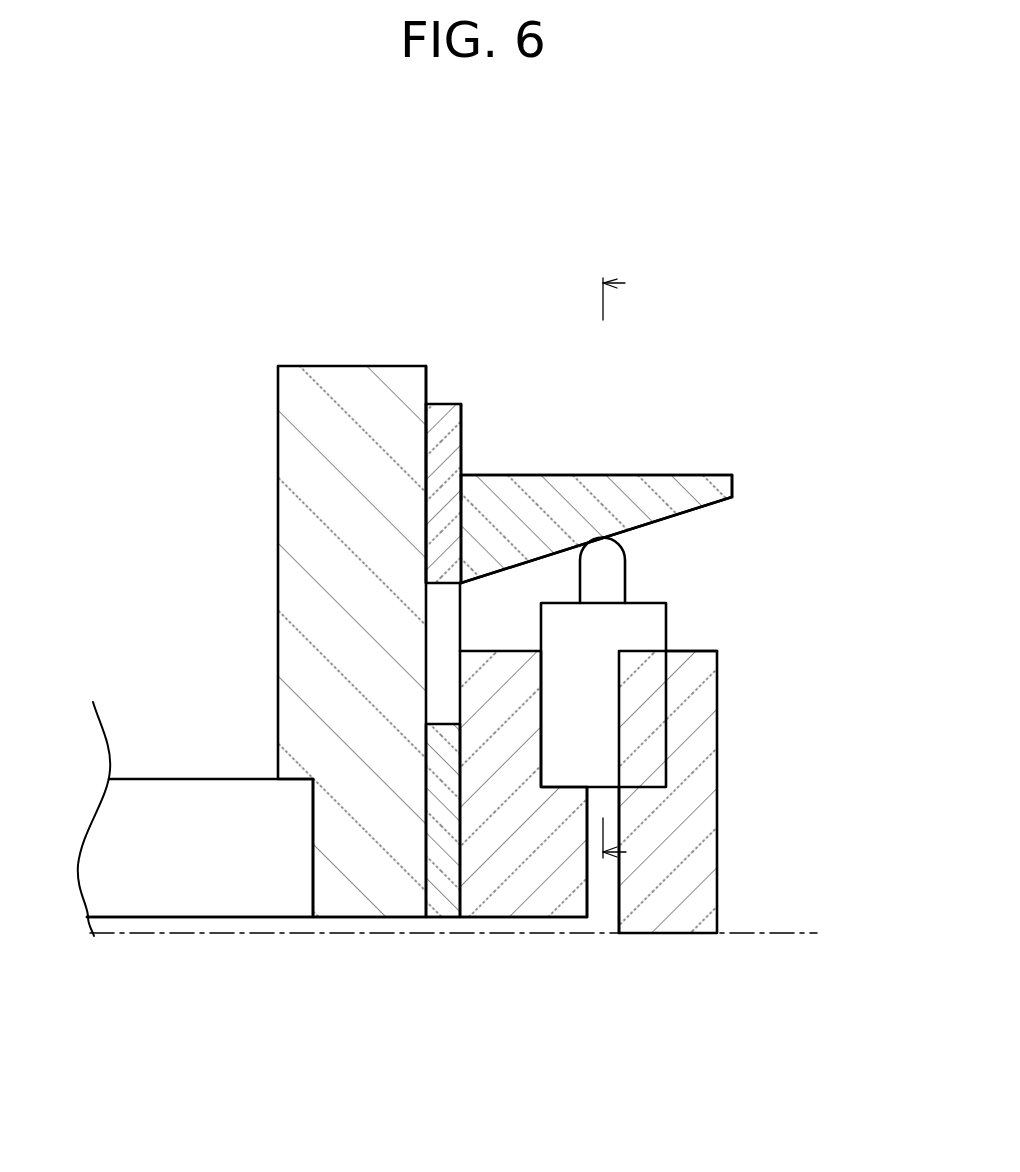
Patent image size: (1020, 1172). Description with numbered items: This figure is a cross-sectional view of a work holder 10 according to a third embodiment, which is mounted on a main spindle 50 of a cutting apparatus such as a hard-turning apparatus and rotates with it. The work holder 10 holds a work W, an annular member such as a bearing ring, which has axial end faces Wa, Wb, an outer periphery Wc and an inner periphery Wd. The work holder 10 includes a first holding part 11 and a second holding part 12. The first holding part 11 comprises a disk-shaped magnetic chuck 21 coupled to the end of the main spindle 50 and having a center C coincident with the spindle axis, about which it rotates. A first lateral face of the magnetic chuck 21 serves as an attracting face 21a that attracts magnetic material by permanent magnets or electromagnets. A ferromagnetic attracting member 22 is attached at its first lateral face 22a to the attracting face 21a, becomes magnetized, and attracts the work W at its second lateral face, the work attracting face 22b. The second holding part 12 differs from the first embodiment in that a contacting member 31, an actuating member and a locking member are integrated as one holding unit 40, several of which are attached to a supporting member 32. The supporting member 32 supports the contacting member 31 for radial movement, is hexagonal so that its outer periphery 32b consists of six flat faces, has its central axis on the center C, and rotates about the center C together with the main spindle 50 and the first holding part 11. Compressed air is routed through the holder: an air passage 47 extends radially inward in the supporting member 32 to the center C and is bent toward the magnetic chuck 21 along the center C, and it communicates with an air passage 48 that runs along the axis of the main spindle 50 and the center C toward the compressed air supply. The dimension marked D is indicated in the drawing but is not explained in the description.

The work holder 10 is at (543, 568).
The first holding part 11 is at (374, 570).
The second holding part 12 is at (667, 699).
The magnetic chuck 21 is at (352, 594).
The attracting face 21a is at (455, 330).
The attracting member 22 is at (451, 614).
The first lateral face 22a is at (318, 493).
The work attracting face 22b is at (498, 395).
The contacting member 31 is at (603, 509).
The supporting member 32 is at (639, 792).
The outer periphery 32b is at (750, 640).
The holding unit 40 is at (662, 680).
The air passage 47 is at (633, 885).
The air passage 48 is at (337, 970).
The main spindle 50 is at (195, 809).
The work W is at (607, 461).
The axial end face Wa is at (483, 452).
The axial end face Wb is at (782, 461).
The outer periphery Wc is at (596, 427).
The inner periphery Wd is at (638, 539).
The center C is at (453, 887).
The distance D is at (627, 555).